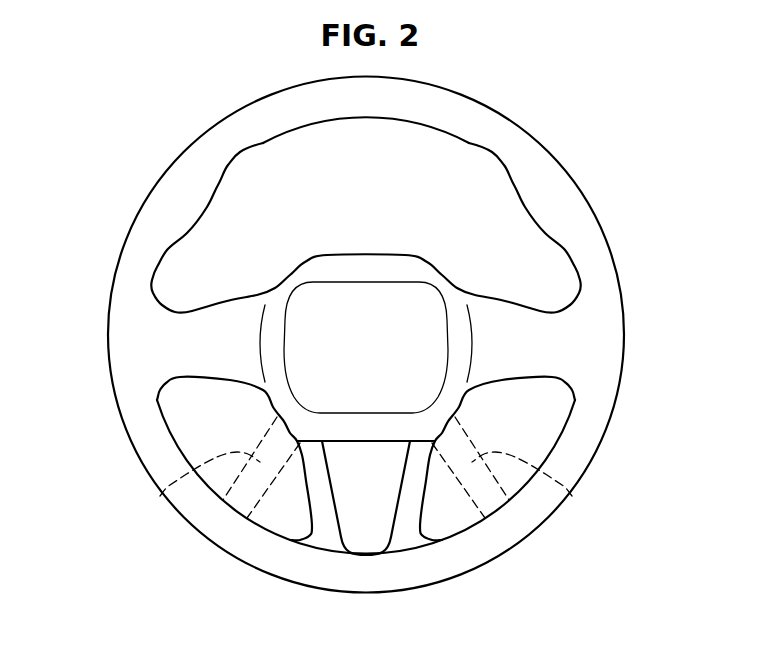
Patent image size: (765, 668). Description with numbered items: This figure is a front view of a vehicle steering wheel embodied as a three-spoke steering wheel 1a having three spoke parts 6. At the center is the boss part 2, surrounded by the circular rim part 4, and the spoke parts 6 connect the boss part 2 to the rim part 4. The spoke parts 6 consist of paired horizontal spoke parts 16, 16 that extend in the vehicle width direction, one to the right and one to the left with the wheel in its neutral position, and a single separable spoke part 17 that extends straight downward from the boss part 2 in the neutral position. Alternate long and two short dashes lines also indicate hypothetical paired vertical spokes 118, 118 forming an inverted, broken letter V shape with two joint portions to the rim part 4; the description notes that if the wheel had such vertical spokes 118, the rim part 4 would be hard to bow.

The three-spoke steering wheel 1a is at (567, 165).
The boss part 2 is at (387, 297).
The rim part 4 is at (364, 583).
The spoke parts 6 is at (517, 293).
The horizontal spoke parts 16 is at (199, 343).
The separable spoke part 17 is at (432, 508).
The vertical spokes 118 is at (162, 495).